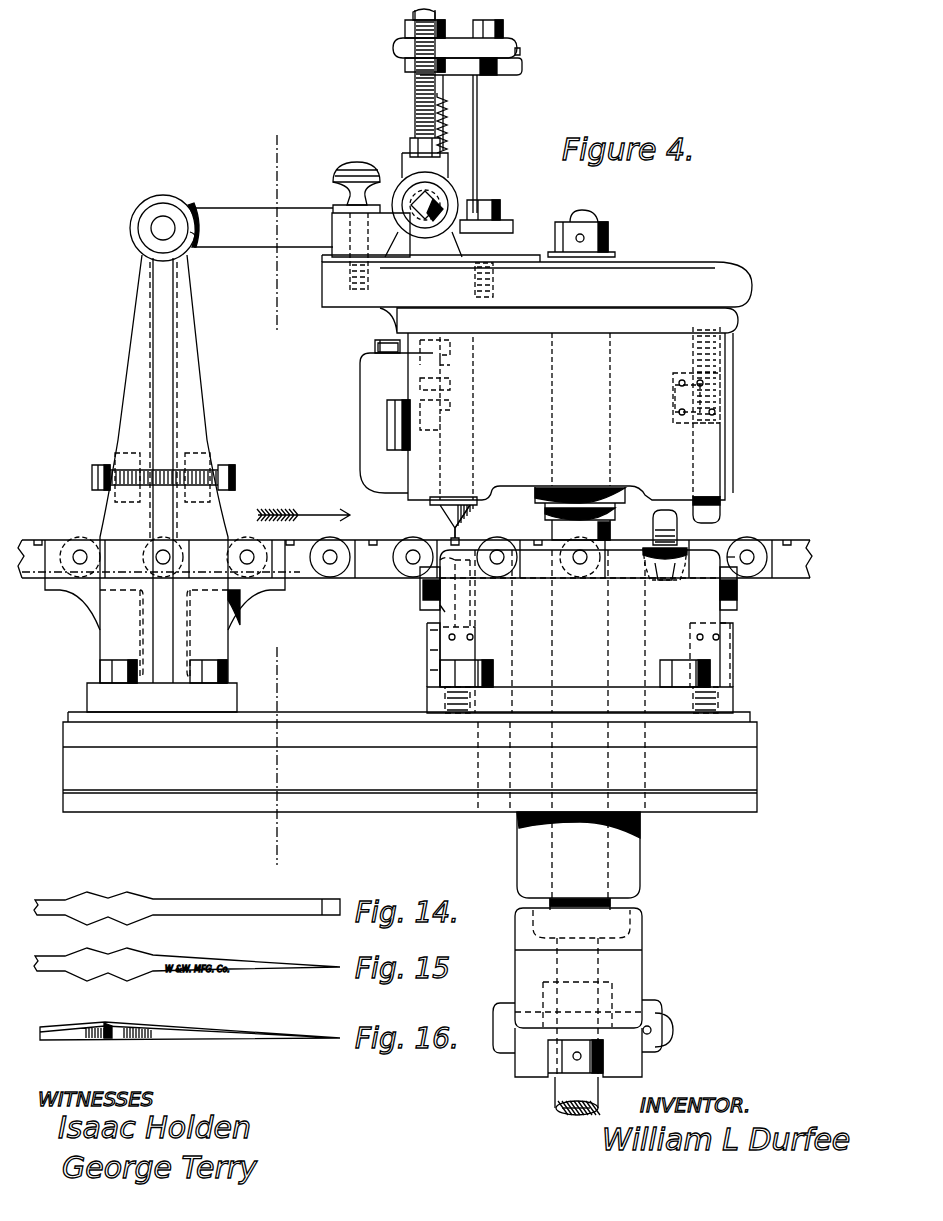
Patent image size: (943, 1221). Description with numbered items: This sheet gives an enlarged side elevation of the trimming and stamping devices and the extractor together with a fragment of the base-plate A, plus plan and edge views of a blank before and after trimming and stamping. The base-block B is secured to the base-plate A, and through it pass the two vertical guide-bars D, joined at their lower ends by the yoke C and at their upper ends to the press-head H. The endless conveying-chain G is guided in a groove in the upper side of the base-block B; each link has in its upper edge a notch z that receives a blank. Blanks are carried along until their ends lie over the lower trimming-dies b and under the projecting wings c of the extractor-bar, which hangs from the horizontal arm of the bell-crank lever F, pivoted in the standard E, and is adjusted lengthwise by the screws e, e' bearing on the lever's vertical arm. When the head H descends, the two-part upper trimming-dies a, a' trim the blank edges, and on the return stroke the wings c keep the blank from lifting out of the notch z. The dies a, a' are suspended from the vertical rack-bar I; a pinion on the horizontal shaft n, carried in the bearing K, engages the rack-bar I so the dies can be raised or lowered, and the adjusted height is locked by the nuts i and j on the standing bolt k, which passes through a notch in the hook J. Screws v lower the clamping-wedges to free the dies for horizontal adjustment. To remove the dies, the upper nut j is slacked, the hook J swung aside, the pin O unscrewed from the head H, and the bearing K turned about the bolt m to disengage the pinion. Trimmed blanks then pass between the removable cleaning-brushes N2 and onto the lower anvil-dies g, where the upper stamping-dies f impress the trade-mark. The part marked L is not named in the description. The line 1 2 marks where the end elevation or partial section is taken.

The base-plate A is at (410, 762).
The base-block B is at (578, 711).
The lower trimming-dies b is at (440, 605).
The yoke C is at (583, 963).
The guide-bars D is at (572, 230).
The standard E is at (165, 483).
The adjusting screw e is at (185, 477).
The adjusting screw e' is at (85, 478).
The bell-crank lever F is at (231, 228).
The upper stamping-dies f is at (723, 508).
The conveying-chain G is at (60, 538).
The lower anvil-dies g is at (730, 543).
The press-head H is at (537, 356).
The rack-bar I is at (460, 144).
The nut i is at (405, 66).
The hook J is at (393, 52).
The upper nut j is at (437, 18).
The bearing K is at (400, 160).
The standing bolt k is at (414, 92).
The shaft end L is at (576, 1128).
The bolt m is at (502, 205).
The cleaning-brushes N2 is at (685, 500).
The horizontal shaft n is at (427, 206).
The pin O is at (366, 209).
The screw v is at (375, 346).
The notch z is at (523, 523).
The upper trimming-die part a is at (448, 521).
The upper trimming-die part a' is at (474, 508).
The projecting wings c is at (458, 532).
The section line 1 is at (276, 223).
The section line 2 is at (274, 766).